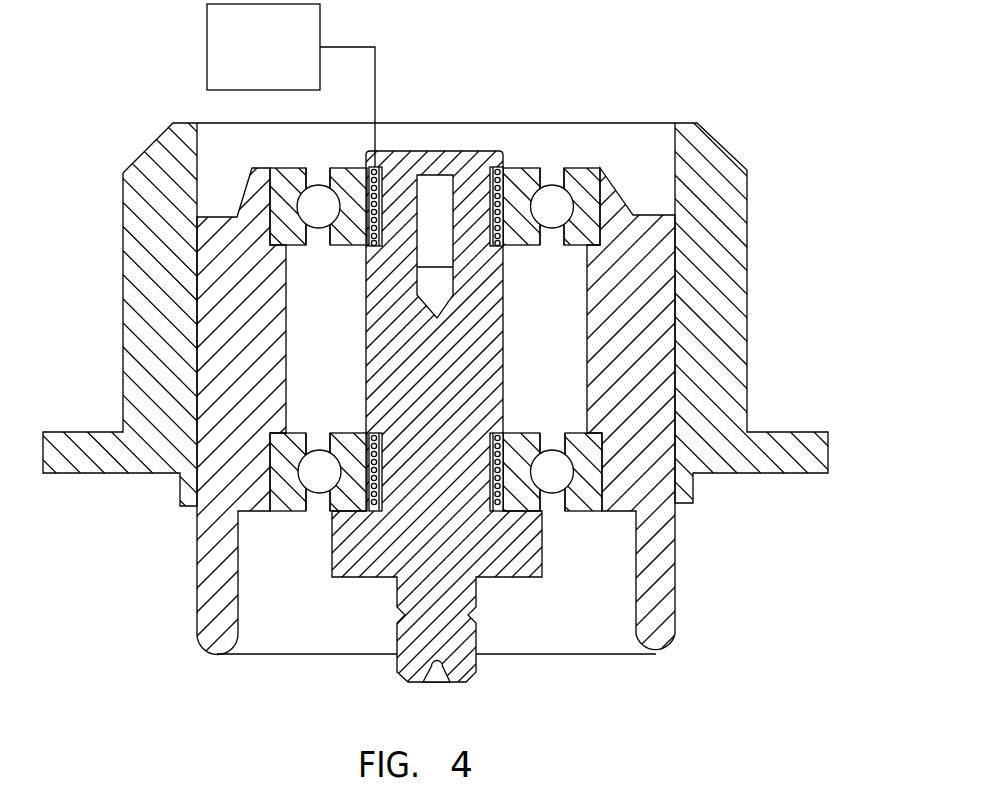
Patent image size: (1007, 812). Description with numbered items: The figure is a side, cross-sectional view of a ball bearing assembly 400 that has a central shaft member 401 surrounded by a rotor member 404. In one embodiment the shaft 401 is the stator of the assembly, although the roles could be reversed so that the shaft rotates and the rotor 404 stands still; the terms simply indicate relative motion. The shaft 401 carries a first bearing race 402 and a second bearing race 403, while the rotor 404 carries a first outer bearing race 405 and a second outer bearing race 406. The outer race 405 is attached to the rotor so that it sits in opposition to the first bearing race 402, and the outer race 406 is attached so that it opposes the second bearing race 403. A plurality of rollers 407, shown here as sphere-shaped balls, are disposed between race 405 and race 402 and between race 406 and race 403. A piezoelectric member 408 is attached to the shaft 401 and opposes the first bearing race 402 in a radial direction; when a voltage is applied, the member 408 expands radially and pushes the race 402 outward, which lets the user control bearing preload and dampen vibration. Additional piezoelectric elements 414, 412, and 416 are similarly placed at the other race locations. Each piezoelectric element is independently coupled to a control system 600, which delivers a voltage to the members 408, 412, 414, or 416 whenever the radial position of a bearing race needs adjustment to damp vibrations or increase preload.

The ball bearing assembly 400 is at (723, 74).
The shaft member 401 is at (383, 558).
The first bearing race 402 is at (528, 177).
The second bearing race 403 is at (527, 497).
The rotor member 404 is at (663, 348).
The first outer bearing race 405 is at (590, 223).
The second outer bearing race 406 is at (593, 483).
The rollers 407 is at (307, 212).
The piezoelectric member 408 is at (378, 185).
The piezoelectric element 412 is at (375, 512).
The piezoelectric element 414 is at (495, 167).
The piezoelectric element 416 is at (497, 492).
The control system 600 is at (207, 42).